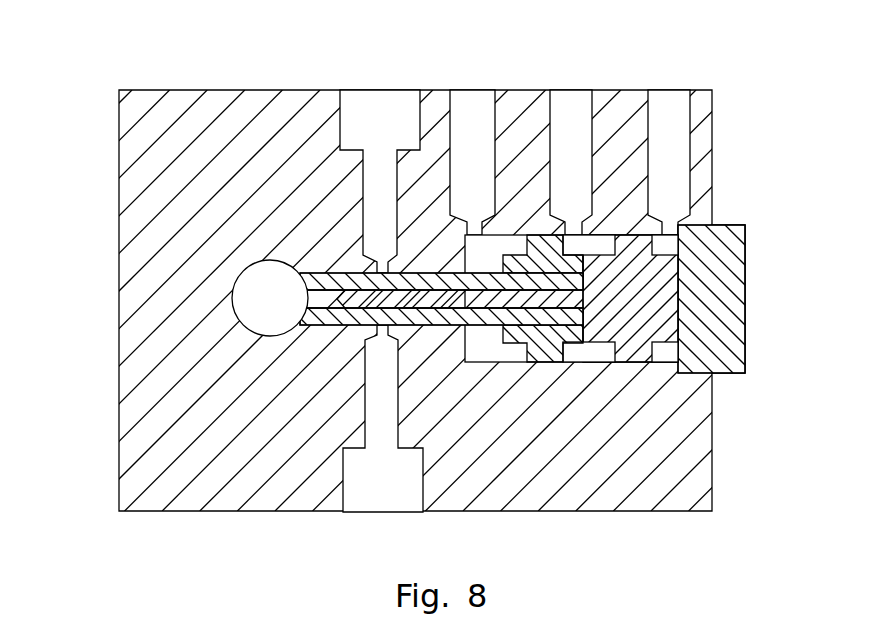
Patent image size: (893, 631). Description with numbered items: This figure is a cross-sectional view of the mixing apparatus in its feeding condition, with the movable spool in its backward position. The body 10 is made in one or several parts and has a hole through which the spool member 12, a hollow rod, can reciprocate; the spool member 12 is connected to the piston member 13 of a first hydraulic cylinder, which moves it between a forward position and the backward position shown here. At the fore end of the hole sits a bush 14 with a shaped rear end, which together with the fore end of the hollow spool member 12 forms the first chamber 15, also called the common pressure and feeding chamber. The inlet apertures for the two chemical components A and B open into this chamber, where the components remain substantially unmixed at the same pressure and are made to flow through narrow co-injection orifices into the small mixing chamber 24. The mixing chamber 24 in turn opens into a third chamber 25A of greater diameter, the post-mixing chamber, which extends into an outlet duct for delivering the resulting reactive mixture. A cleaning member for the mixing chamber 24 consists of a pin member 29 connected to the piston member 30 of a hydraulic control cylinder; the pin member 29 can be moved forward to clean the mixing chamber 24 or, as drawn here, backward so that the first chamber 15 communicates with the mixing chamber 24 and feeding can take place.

The body 10 is at (167, 125).
The spool member 12 is at (420, 283).
The piston member 13 is at (543, 253).
The bush 14 is at (322, 283).
The first chamber 15 is at (365, 285).
The mixing chamber 24 is at (315, 300).
The third chamber 25A is at (257, 307).
The pin member 29 is at (480, 297).
The piston member 30 is at (645, 297).